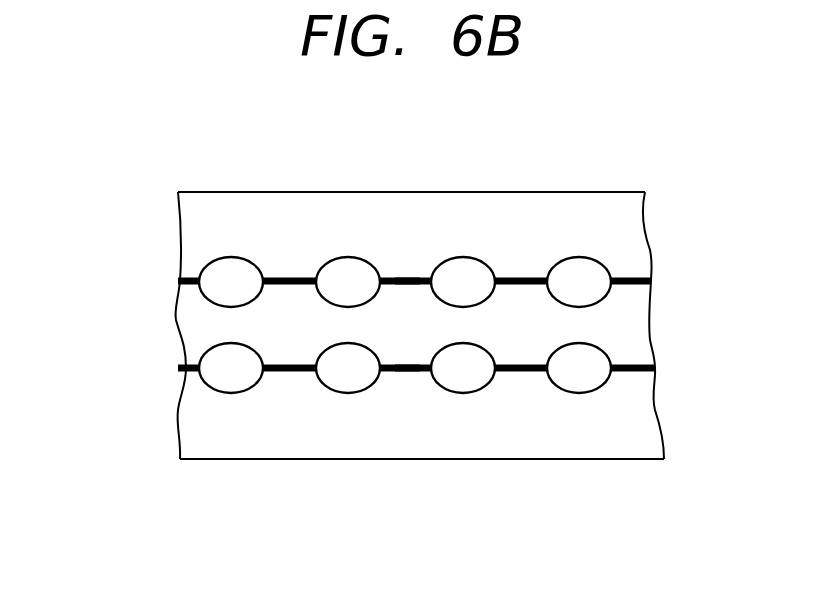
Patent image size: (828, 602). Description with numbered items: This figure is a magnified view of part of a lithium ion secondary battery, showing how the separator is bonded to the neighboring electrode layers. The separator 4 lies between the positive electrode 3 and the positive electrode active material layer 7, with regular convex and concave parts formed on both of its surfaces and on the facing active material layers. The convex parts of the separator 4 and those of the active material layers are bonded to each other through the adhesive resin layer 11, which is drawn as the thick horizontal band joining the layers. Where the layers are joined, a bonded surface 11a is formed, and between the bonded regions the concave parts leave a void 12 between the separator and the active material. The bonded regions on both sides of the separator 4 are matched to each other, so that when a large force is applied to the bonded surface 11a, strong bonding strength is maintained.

The positive electrode 3 is at (197, 231).
The separator 4 is at (200, 327).
The positive electrode active material layer 7 is at (200, 428).
The adhesive resin layer 11 is at (177, 280).
The bonded surface 11a is at (407, 280).
The void 12 is at (581, 273).